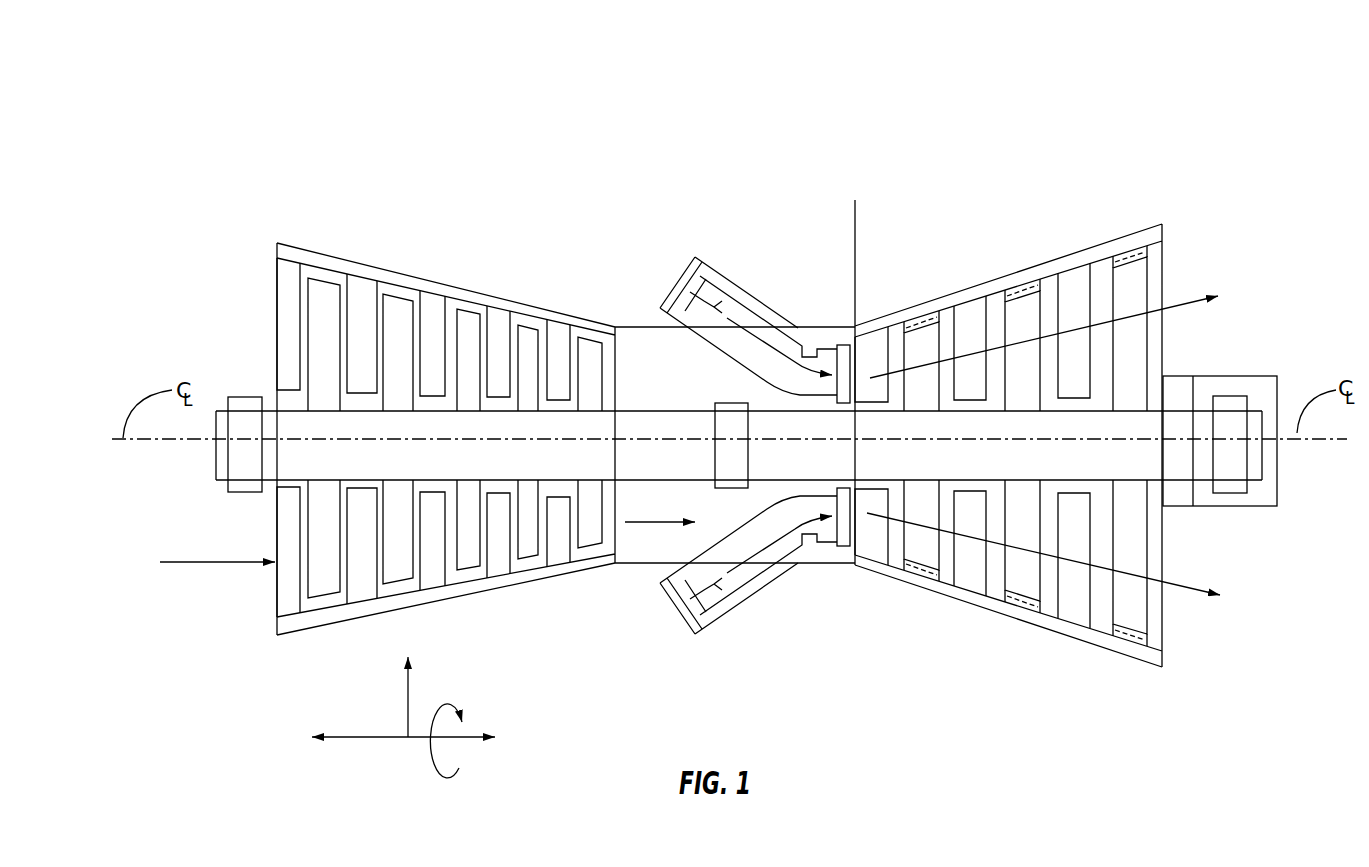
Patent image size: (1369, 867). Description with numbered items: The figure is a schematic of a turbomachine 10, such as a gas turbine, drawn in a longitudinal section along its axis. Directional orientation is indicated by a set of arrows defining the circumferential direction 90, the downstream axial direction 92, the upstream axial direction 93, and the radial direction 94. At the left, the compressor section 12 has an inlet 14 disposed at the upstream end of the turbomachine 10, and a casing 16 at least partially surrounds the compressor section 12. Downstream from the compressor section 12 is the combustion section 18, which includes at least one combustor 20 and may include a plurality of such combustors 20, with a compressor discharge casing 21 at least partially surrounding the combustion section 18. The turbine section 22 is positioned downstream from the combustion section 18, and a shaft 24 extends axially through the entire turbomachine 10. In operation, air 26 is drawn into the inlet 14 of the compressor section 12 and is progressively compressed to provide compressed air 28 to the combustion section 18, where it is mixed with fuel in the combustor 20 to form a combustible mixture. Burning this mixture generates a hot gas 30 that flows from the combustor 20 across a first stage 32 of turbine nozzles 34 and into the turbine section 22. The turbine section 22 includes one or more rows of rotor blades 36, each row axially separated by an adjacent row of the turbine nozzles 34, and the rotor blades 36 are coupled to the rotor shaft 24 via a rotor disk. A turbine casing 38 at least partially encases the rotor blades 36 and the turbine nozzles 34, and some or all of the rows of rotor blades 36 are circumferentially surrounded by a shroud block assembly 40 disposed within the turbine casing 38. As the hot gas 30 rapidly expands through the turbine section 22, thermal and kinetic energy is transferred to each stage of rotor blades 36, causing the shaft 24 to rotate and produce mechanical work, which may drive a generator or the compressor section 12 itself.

The turbomachine 10 is at (671, 75).
The compressor section 12 is at (615, 327).
The inlet 14 is at (277, 315).
The casing 16 is at (295, 636).
The combustion section 18 is at (615, 200).
The combustor 20 is at (727, 310).
The compressor discharge casing 21 is at (798, 324).
The turbine section 22 is at (1162, 224).
The shaft 24 is at (1200, 410).
The air 26 is at (220, 561).
The compressed air 28 is at (635, 522).
The hot gas 30 is at (747, 333).
The first stage 32 is at (871, 567).
The turbine nozzles 34 is at (975, 312).
The rotor blades 36 is at (918, 547).
The turbine casing 38 is at (1095, 652).
The shroud block assembly 40 is at (1023, 288).
The circumferential direction 90 is at (428, 758).
The downstream axial direction 92 is at (473, 732).
The upstream axial direction 93 is at (357, 740).
The radial direction 94 is at (407, 692).